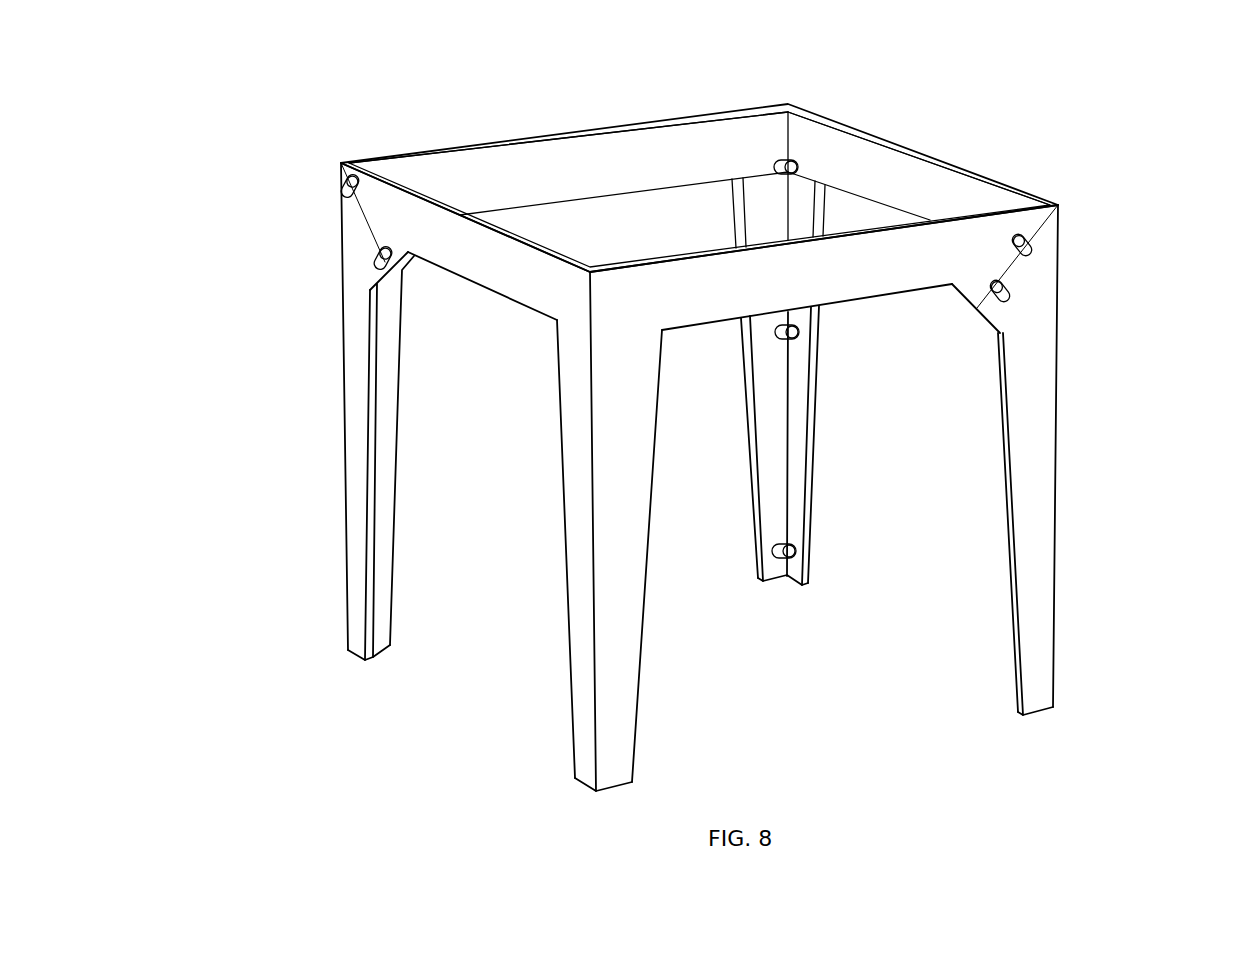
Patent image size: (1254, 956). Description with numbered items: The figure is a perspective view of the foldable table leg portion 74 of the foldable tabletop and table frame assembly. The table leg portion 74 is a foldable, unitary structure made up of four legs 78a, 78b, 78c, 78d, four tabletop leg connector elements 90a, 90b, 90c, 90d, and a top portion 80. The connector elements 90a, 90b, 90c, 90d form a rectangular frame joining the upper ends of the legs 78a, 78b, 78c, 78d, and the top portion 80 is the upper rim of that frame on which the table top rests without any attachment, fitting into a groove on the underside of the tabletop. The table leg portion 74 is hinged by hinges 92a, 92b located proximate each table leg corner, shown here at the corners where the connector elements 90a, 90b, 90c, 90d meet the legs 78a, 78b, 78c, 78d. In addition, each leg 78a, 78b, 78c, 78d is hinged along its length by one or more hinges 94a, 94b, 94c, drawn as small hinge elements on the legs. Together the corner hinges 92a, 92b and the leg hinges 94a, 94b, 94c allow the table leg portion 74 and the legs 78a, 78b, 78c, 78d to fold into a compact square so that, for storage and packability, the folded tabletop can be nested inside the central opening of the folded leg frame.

The table leg portion 74 is at (1128, 120).
The top portion 80 is at (874, 133).
The leg 78a is at (1057, 512).
The leg 78b is at (818, 430).
The leg 78c is at (647, 651).
The leg 78d is at (347, 455).
The tabletop leg connector element 90a is at (540, 135).
The tabletop leg connector element 90b is at (940, 160).
The tabletop leg connector element 90c is at (707, 250).
The tabletop leg connector element 90d is at (461, 281).
The hinge 92a is at (346, 187).
The hinge 92b is at (378, 258).
The hinge 94a is at (780, 160).
The hinge 94b is at (799, 332).
The hinge 94c is at (796, 551).